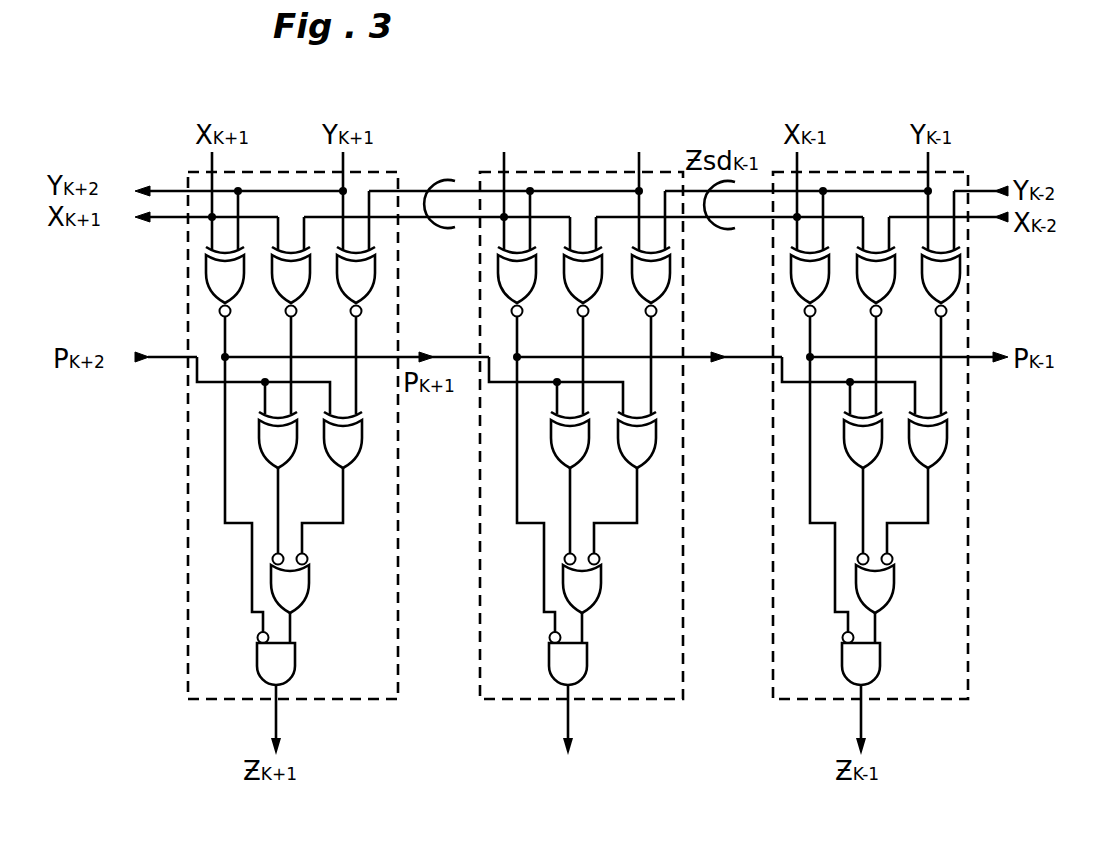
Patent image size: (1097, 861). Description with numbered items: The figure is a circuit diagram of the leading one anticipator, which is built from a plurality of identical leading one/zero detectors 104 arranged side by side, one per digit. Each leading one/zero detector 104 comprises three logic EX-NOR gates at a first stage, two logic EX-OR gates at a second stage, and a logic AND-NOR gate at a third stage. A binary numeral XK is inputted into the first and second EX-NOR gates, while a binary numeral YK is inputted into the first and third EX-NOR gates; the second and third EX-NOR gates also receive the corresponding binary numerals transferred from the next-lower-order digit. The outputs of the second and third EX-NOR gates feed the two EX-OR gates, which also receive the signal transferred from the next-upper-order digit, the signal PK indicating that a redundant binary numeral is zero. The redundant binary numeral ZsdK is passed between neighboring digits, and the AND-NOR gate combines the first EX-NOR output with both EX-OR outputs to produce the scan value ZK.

The leading 1/0 detector 104 is at (1005, 680).
The binary numeral X_k XK is at (502, 185).
The binary numeral Y_k YK is at (635, 185).
The signal P_k PK is at (649, 375).
The scan value Z_k ZK is at (565, 737).
The redundant binary numeral Zsd_k ZsdK is at (437, 188).